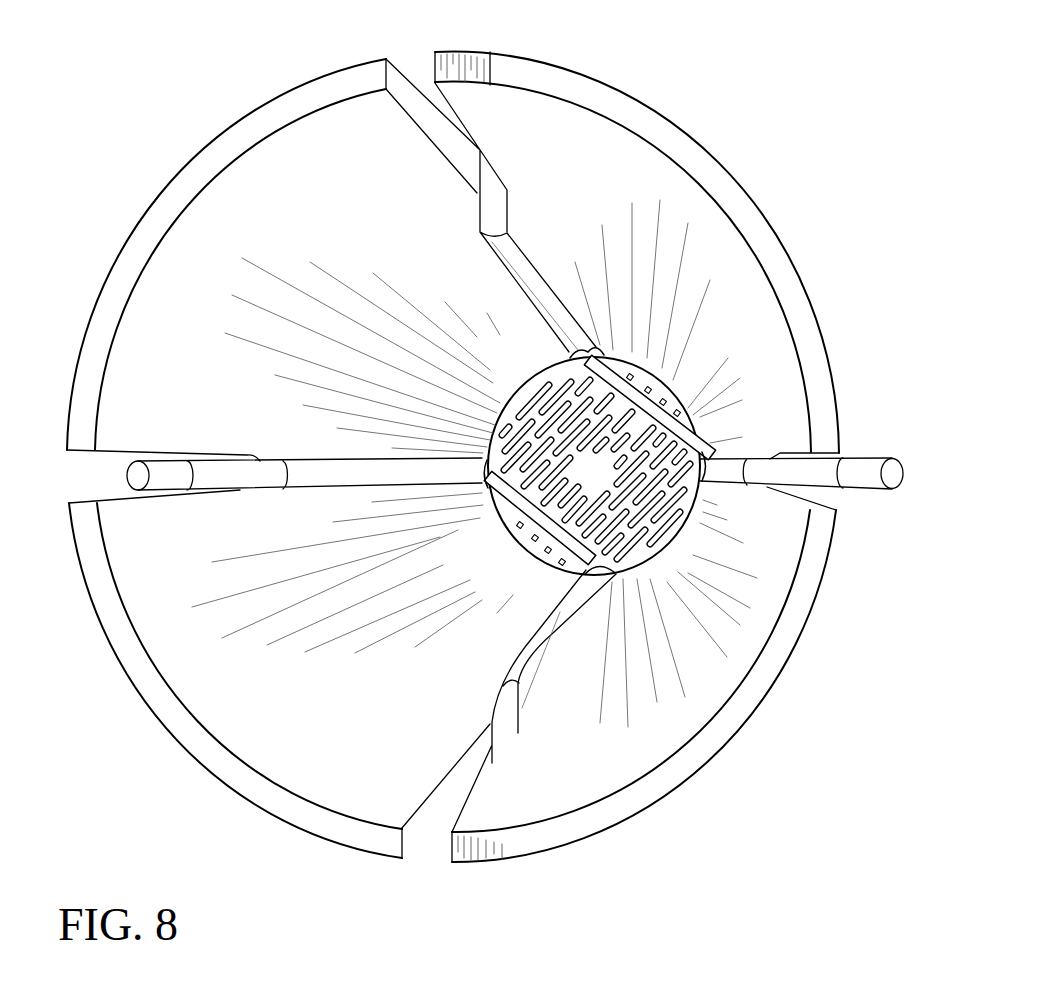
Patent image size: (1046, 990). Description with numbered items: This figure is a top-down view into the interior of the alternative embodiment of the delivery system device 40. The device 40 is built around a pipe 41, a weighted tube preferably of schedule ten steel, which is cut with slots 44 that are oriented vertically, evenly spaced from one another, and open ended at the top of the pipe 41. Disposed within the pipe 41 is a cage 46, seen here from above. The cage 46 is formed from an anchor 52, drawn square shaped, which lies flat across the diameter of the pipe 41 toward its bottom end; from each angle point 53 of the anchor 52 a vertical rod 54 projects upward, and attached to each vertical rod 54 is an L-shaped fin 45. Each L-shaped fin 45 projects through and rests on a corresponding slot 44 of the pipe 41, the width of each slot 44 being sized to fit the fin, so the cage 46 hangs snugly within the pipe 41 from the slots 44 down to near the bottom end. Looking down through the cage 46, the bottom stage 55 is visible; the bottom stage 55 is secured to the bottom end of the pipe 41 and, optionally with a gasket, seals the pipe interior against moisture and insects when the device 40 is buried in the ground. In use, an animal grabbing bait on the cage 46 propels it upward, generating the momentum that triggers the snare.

The device 40 is at (463, 454).
The pipe 41 is at (630, 820).
The slots 44 is at (424, 97).
The L-shaped fin 45 is at (135, 478).
The cage 46 is at (855, 452).
The anchor 52 is at (648, 380).
The angle points 53 is at (557, 370).
The vertical rod 54 is at (523, 250).
The bottom stage 55 is at (609, 480).